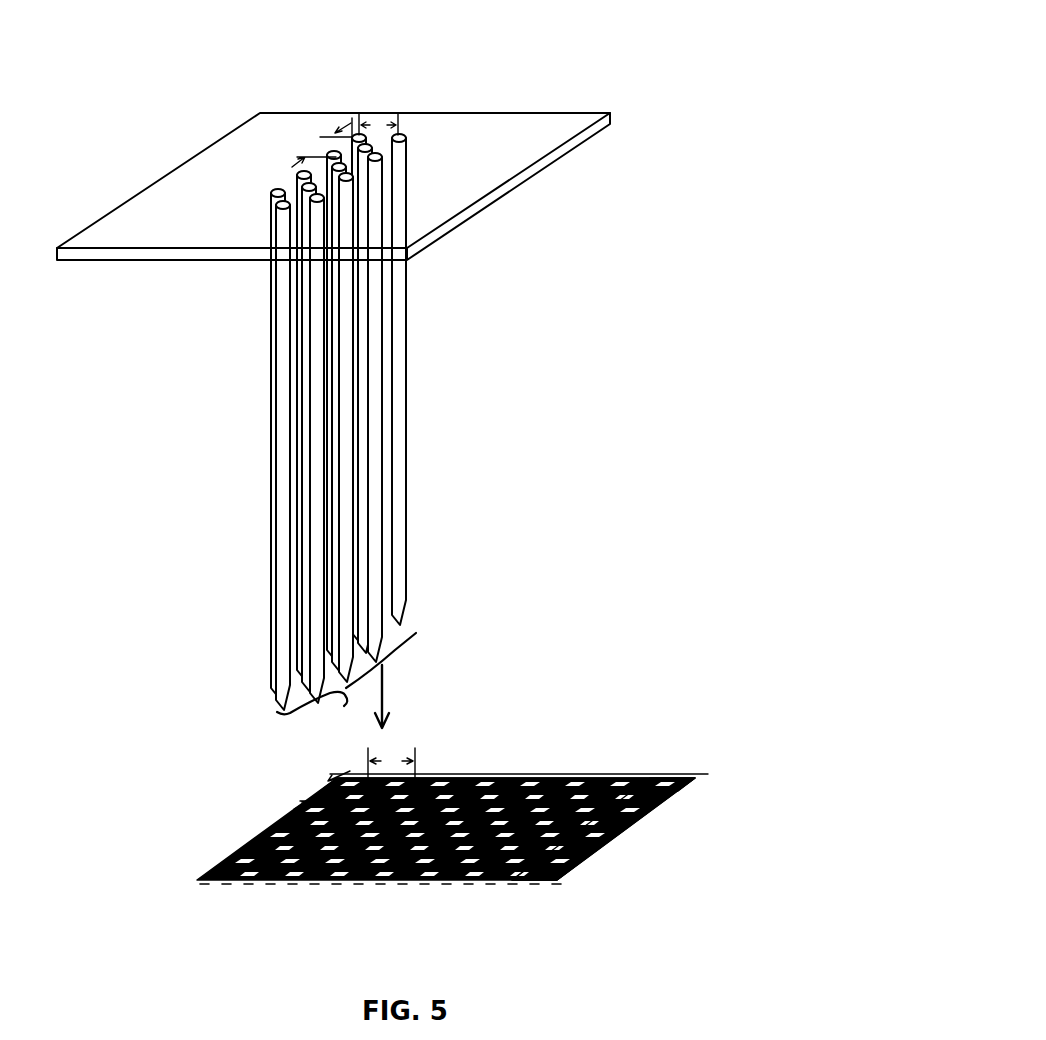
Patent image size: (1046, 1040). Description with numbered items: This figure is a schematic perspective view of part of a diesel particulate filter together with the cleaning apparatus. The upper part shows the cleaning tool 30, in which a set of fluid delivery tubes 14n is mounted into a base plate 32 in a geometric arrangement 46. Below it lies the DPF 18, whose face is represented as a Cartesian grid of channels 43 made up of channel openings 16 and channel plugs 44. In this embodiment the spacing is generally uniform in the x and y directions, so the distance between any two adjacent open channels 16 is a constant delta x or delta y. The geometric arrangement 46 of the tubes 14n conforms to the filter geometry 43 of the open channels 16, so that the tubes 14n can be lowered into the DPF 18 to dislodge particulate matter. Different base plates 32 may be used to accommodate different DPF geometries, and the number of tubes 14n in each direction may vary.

The needle array assembly 30 is at (634, 53).
The base plate 32 is at (560, 160).
The geometric arrangement 46 is at (432, 178).
The tubes 14n is at (343, 708).
The DPF 18 is at (636, 694).
The channel openings 16 is at (461, 777).
The channel plugs 44 is at (618, 777).
The grid of channels 43 is at (535, 879).